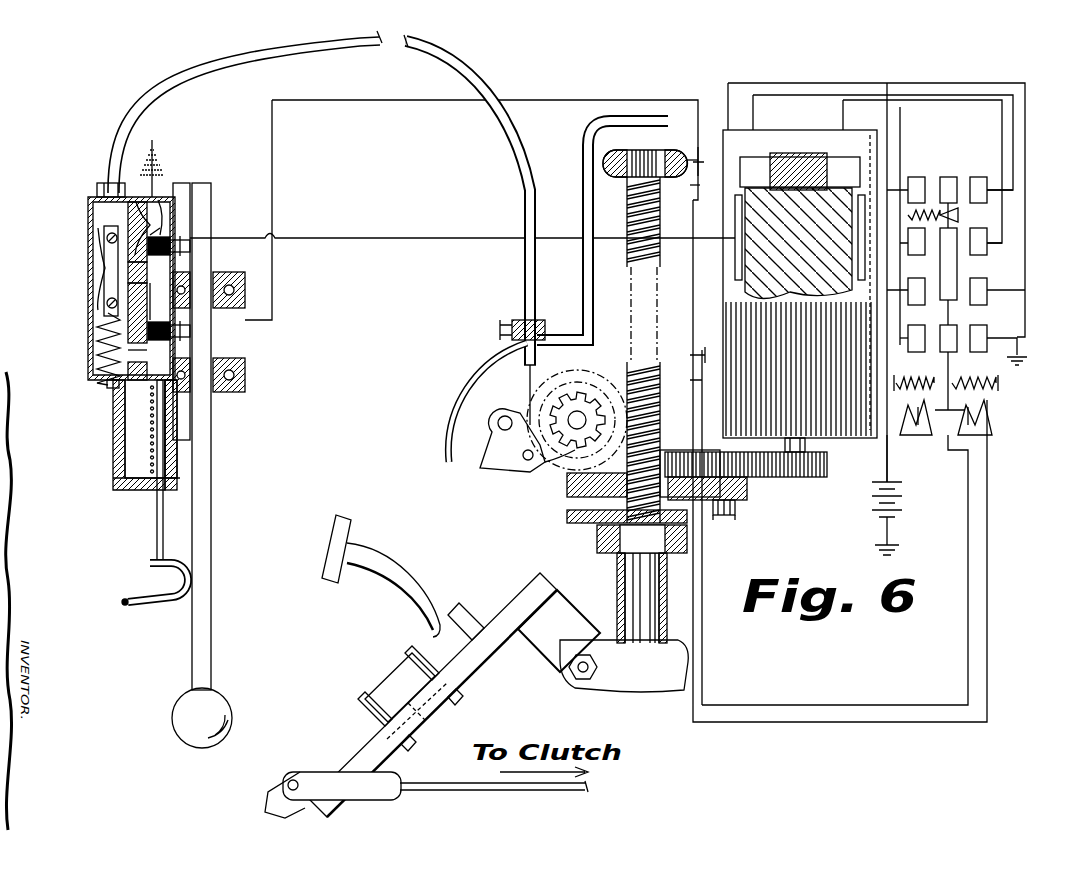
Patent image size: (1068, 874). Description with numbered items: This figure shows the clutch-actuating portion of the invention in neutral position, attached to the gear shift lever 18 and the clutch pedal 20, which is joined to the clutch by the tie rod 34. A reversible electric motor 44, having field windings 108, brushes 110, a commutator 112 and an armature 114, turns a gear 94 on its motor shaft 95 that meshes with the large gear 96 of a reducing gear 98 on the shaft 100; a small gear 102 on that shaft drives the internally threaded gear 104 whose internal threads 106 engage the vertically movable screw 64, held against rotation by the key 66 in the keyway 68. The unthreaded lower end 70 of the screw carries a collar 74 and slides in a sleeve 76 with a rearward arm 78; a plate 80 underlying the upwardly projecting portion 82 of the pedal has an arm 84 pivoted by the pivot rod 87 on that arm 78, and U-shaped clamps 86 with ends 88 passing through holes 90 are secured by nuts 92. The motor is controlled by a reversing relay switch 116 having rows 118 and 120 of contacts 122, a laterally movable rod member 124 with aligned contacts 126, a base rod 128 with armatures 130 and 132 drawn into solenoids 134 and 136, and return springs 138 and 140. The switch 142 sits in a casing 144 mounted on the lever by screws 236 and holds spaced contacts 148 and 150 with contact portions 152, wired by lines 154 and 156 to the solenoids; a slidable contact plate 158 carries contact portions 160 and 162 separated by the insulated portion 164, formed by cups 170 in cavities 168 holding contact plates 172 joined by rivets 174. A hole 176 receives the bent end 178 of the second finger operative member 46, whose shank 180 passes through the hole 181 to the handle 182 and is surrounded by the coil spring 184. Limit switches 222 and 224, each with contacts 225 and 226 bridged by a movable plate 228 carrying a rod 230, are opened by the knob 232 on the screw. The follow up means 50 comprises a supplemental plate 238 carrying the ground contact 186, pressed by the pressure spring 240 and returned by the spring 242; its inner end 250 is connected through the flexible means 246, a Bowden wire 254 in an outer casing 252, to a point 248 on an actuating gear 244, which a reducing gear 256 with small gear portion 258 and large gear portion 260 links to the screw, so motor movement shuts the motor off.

The gear shift lever 18 is at (212, 600).
The clutch pedal 20 is at (325, 550).
The tie rod 34 is at (470, 788).
The clutch motive means 44 is at (855, 440).
The second finger operative member 46 is at (157, 540).
The follow up means for the clutch 50 is at (190, 200).
The screw 64 is at (627, 252).
The key 66 is at (600, 522).
The keyway 68 is at (630, 323).
The lower end of screw 70 is at (632, 600).
The collar 74 is at (597, 548).
The sleeve 76 is at (620, 580).
The arm 78 is at (672, 685).
The plate 80 is at (478, 652).
The pedal portion 82 is at (425, 630).
The arm of plate 84 is at (545, 660).
The clamps 86 is at (415, 668).
The pivot rod 87 is at (578, 672).
The clamp ends 88 is at (415, 745).
The holes 90 is at (430, 690).
The nuts 92 is at (450, 705).
The gear 94 is at (827, 464).
The motor shaft 95 is at (805, 446).
The large gear 96 is at (750, 478).
The reducing gear 98 is at (760, 490).
The shaft 100 is at (717, 512).
The small gear 102 is at (740, 514).
The internally threaded gear 104 is at (610, 480).
The internal threads 106 is at (700, 455).
The field windings 108 is at (735, 232).
The brushes 110 is at (758, 160).
The commutator 112 is at (790, 160).
The armature 114 is at (855, 190).
The reversing relay switch 116 is at (978, 318).
The left hand row of contacts 118 is at (910, 346).
The right hand row of contacts 120 is at (990, 340).
The contacts 122 is at (956, 275).
The rod member 124 is at (950, 293).
The aligned contacts 126 is at (960, 210).
The base rod 128 is at (950, 408).
The armature 130 is at (915, 420).
The armature 132 is at (972, 423).
The solenoid 134 is at (887, 440).
The solenoid 136 is at (990, 410).
The spring 138 is at (930, 385).
The spring 140 is at (980, 378).
The switch 142 is at (127, 272).
The casing 144 is at (130, 320).
The contact 148 is at (190, 240).
The contact 150 is at (192, 330).
The contact portions 152 is at (159, 301).
The line 154 is at (392, 238).
The line 156 is at (355, 95).
The slidable contact plate 158 is at (195, 272).
The contact portion 160 is at (170, 220).
The contact portion 162 is at (100, 330).
The insulated portion 164 is at (100, 250).
The cavities 168 is at (165, 197).
The cup 170 is at (145, 197).
The contact plate 172 is at (97, 200).
The rivets 174 is at (170, 197).
The hole 176 is at (110, 388).
The bent end 178 is at (125, 372).
The shank 180 is at (178, 408).
The hole 181 is at (148, 482).
The handle 182 is at (125, 600).
The coil spring 184 is at (165, 430).
The ground contact 186 is at (102, 300).
The limit switch 222 is at (700, 147).
The limit switch 224 is at (700, 350).
The contact 225 is at (730, 100).
The contact 226 is at (703, 168).
The movable connecting plate 228 is at (748, 130).
The rod 230 is at (680, 150).
The knob 232 is at (645, 150).
The screws 236 is at (246, 372).
The supplemental plate 238 is at (128, 270).
The pressure spring 240 is at (125, 295).
The return spring 242 is at (110, 355).
The actuating gear 244 is at (482, 470).
The flexible means 246 is at (518, 132).
The point 248 is at (525, 462).
The inner end 250 is at (105, 235).
The outer flexible casing 252 is at (524, 190).
The axially movable wire 254 is at (530, 368).
The reducing gear 256 is at (560, 380).
The small gear portion 258 is at (575, 450).
The large gear portion 260 is at (560, 468).